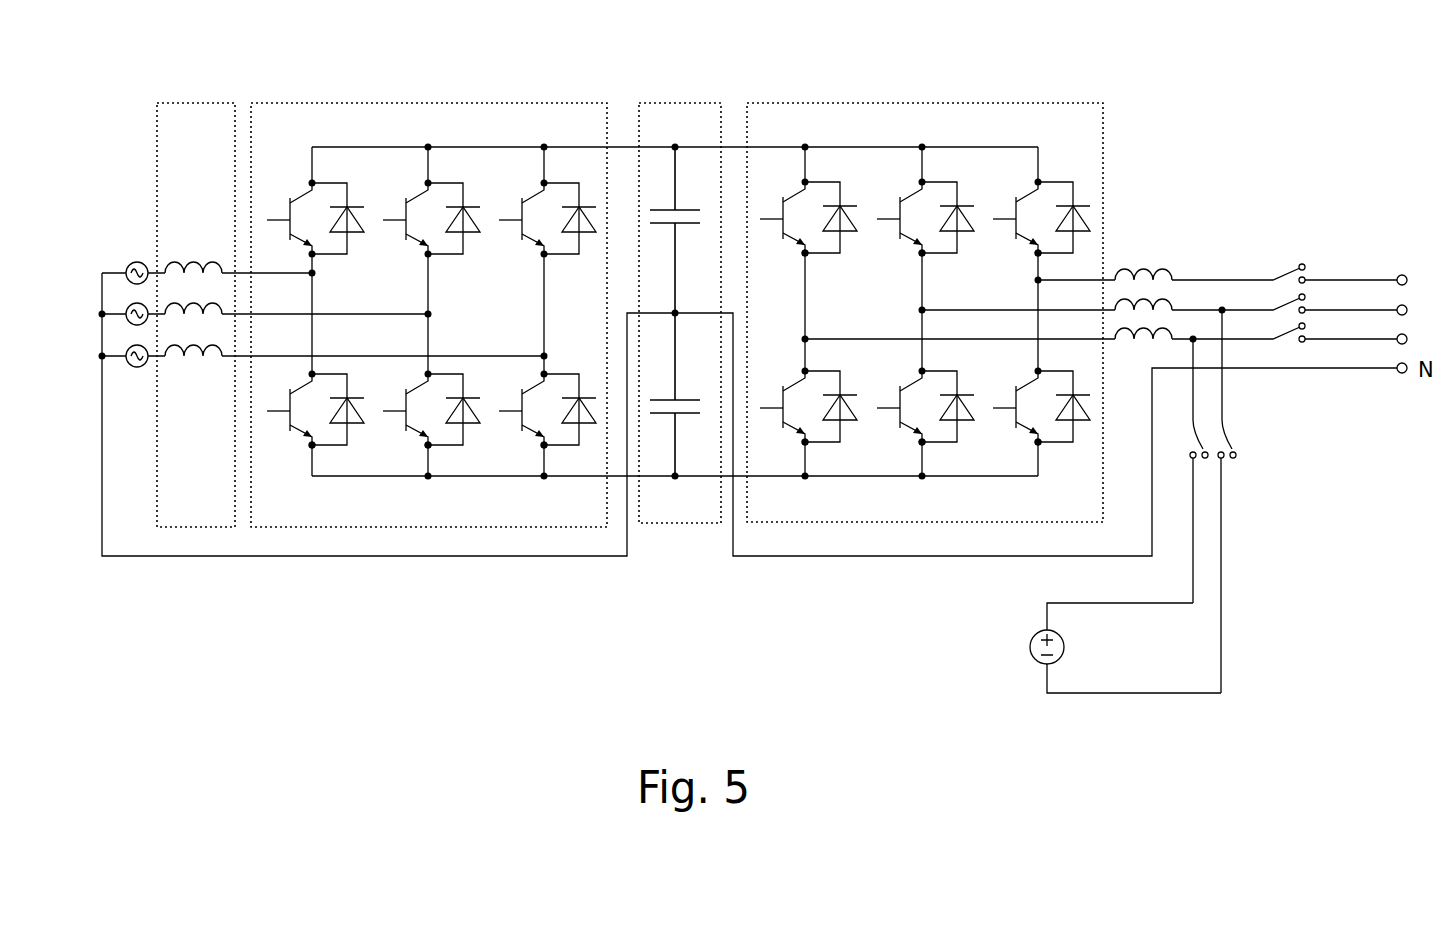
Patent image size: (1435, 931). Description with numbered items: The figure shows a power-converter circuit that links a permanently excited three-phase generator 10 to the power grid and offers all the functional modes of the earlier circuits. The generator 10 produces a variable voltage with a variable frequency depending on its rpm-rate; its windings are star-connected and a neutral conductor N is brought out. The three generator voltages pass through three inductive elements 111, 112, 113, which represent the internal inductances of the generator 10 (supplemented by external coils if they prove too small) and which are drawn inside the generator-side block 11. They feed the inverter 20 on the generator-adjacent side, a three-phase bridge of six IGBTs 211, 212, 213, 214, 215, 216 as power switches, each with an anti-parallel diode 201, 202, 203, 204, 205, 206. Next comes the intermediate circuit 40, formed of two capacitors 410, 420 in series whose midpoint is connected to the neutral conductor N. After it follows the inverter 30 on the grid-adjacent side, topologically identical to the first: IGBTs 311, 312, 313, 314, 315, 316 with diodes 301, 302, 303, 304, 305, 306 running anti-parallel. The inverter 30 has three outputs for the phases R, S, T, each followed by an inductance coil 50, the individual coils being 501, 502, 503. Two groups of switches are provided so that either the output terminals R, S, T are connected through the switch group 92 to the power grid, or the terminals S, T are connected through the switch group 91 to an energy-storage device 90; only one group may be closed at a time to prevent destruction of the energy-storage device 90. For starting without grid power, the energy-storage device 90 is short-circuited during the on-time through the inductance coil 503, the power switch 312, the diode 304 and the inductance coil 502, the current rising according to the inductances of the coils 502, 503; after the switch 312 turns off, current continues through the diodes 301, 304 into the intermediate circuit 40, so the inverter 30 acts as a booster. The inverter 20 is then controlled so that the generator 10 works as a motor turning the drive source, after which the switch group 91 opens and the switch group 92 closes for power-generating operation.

The generator 10 is at (127, 248).
The input reactor 11 is at (203, 103).
The inductive element 111 is at (238, 253).
The inductive element 112 is at (296, 296).
The inductive element 113 is at (354, 366).
The inverter 20 is at (582, 103).
The diode 201 is at (330, 218).
The diode 202 is at (330, 408).
The diode 203 is at (449, 217).
The diode 204 is at (446, 408).
The diode 205 is at (551, 208).
The diode 206 is at (551, 397).
The IGBT 211 is at (290, 261).
The IGBT 212 is at (290, 455).
The IGBT 213 is at (407, 282).
The IGBT 214 is at (407, 455).
The IGBT 215 is at (523, 303).
The IGBT 216 is at (523, 455).
The inverter 30 is at (775, 103).
The diode 301 is at (812, 206).
The diode 302 is at (813, 396).
The diode 303 is at (930, 206).
The diode 304 is at (930, 396).
The diode 305 is at (1044, 206).
The diode 306 is at (1044, 396).
The IGBT 311 is at (784, 256).
The IGBT 312 is at (784, 446).
The IGBT 313 is at (902, 256).
The IGBT 314 is at (902, 446).
The IGBT 315 is at (1017, 256).
The IGBT 316 is at (1019, 445).
The intermediate circuit 40 is at (683, 103).
The capacitor 410 is at (685, 230).
The capacitor 420 is at (686, 394).
The inductance coil 50 is at (1150, 210).
The reactor 501 is at (1143, 258).
The inductance coil 502 is at (1166, 296).
The inductance coil 503 is at (1143, 347).
The energy-storage device 90 is at (1103, 648).
The switch group 91 is at (1258, 462).
The switch group 92 is at (1290, 252).